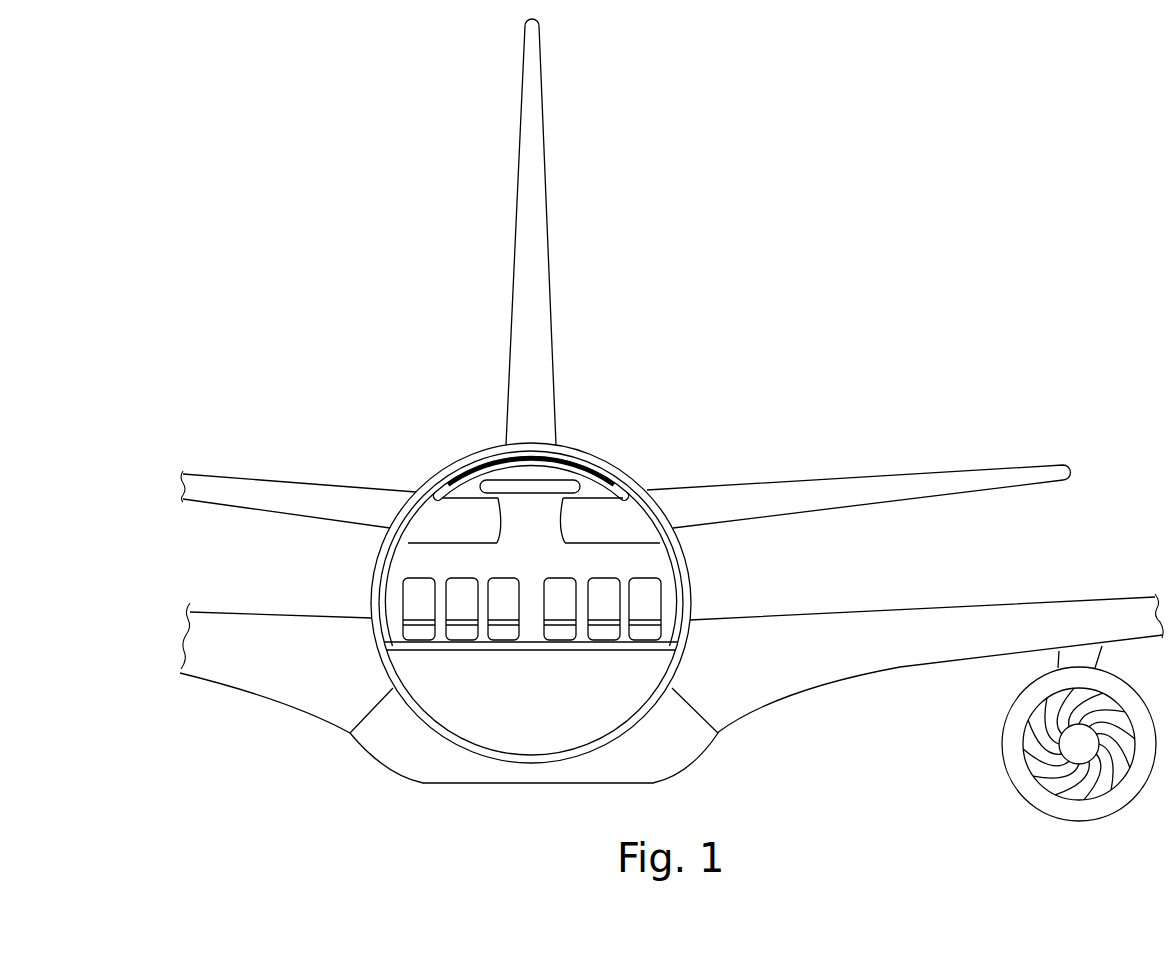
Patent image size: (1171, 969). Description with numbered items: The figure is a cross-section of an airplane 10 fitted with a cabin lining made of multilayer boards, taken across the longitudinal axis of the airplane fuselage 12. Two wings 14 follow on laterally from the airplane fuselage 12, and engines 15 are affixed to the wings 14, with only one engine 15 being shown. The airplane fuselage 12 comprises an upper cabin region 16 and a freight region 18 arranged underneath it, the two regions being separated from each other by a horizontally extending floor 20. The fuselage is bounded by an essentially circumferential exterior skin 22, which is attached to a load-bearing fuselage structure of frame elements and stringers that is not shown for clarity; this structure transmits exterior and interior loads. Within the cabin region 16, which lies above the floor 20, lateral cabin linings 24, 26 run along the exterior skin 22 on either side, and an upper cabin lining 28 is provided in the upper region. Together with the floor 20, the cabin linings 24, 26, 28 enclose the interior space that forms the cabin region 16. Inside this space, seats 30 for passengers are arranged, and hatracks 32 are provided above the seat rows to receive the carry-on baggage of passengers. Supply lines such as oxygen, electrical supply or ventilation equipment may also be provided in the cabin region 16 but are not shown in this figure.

The airplane 10 is at (405, 402).
The airplane fuselage 12 is at (322, 541).
The wings 14 is at (883, 632).
The engine 15 is at (1000, 748).
The cabin region 16 is at (533, 510).
The freight region 18 is at (515, 723).
The floor 20 is at (547, 643).
The exterior skin 22 is at (622, 478).
The lateral cabin lining 24 is at (376, 572).
The lateral cabin lining 26 is at (675, 557).
The upper cabin lining 28 is at (452, 483).
The seats 30 is at (460, 585).
The hatracks 32 is at (617, 527).